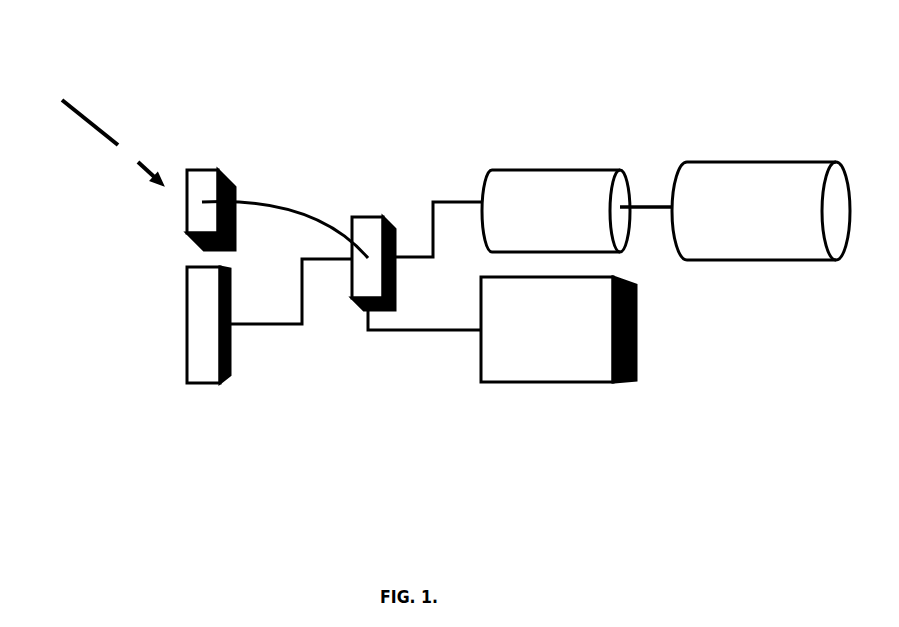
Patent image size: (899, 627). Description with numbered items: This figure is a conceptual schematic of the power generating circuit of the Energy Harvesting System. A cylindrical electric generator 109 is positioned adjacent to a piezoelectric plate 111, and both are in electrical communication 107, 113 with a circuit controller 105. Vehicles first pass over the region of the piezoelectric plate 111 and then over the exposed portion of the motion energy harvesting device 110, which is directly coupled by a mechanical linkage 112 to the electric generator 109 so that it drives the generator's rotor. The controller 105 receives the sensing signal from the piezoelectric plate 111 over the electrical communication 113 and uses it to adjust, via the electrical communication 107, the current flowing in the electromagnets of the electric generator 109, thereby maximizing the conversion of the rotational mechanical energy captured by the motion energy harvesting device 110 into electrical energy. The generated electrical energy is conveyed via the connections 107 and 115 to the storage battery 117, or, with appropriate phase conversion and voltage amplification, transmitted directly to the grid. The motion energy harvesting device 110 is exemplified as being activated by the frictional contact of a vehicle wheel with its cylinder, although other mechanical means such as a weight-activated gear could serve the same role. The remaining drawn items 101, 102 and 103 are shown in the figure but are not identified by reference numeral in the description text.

The incident light beam 101 is at (112, 142).
The first optical element / sample 102 is at (178, 220).
The transmitted light path 103 is at (235, 142).
The circuit controller 105 is at (367, 207).
The electrical communication 107 is at (433, 80).
The cylindrical electric generator 109 is at (535, 45).
The motion energy harvesting device 110 is at (719, 42).
The piezoelectric plate 111 is at (547, 525).
The mechanical linkage 112 is at (653, 88).
The electrical communication 113 is at (433, 342).
The electrical connection to storage battery 115 is at (302, 458).
The storage battery 117 is at (177, 327).